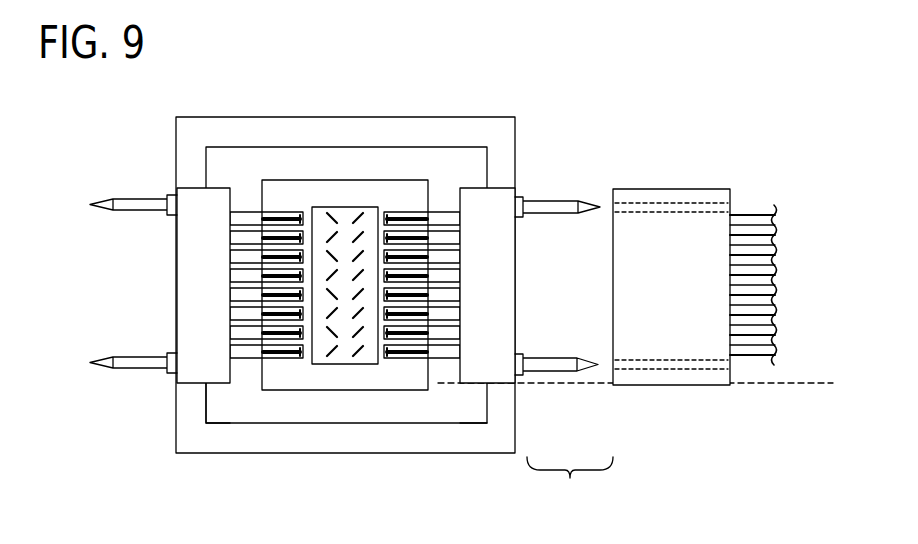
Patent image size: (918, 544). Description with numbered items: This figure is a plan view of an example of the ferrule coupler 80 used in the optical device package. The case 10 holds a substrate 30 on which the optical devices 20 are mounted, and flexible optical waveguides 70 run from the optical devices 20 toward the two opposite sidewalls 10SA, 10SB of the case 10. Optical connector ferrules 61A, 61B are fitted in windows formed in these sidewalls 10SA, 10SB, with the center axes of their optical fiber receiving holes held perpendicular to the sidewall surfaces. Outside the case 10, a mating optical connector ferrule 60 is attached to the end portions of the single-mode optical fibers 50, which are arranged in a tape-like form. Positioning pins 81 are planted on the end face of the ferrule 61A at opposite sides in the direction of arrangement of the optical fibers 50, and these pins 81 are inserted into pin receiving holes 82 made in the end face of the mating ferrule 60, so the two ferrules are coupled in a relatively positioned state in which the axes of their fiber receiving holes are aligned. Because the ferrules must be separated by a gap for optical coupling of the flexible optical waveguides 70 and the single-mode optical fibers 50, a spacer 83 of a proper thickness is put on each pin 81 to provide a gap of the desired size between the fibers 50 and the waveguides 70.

The case 10 is at (305, 454).
The sidewall of the case 10SA is at (473, 405).
The sidewall of the case 10SB is at (210, 410).
The optical devices 20 is at (344, 208).
The substrate 30 is at (280, 200).
The single-mode optical fibers 50 is at (753, 230).
The optical connector ferrule 60 is at (667, 188).
The optical connector ferrule 61A is at (507, 197).
The optical connector ferrule 61B is at (170, 378).
The flexible optical waveguides 70 is at (441, 208).
The coupler 80 is at (570, 486).
The positioning pins 81 is at (540, 366).
The pin receiving holes 82 is at (613, 364).
The spacer 83 is at (525, 202).